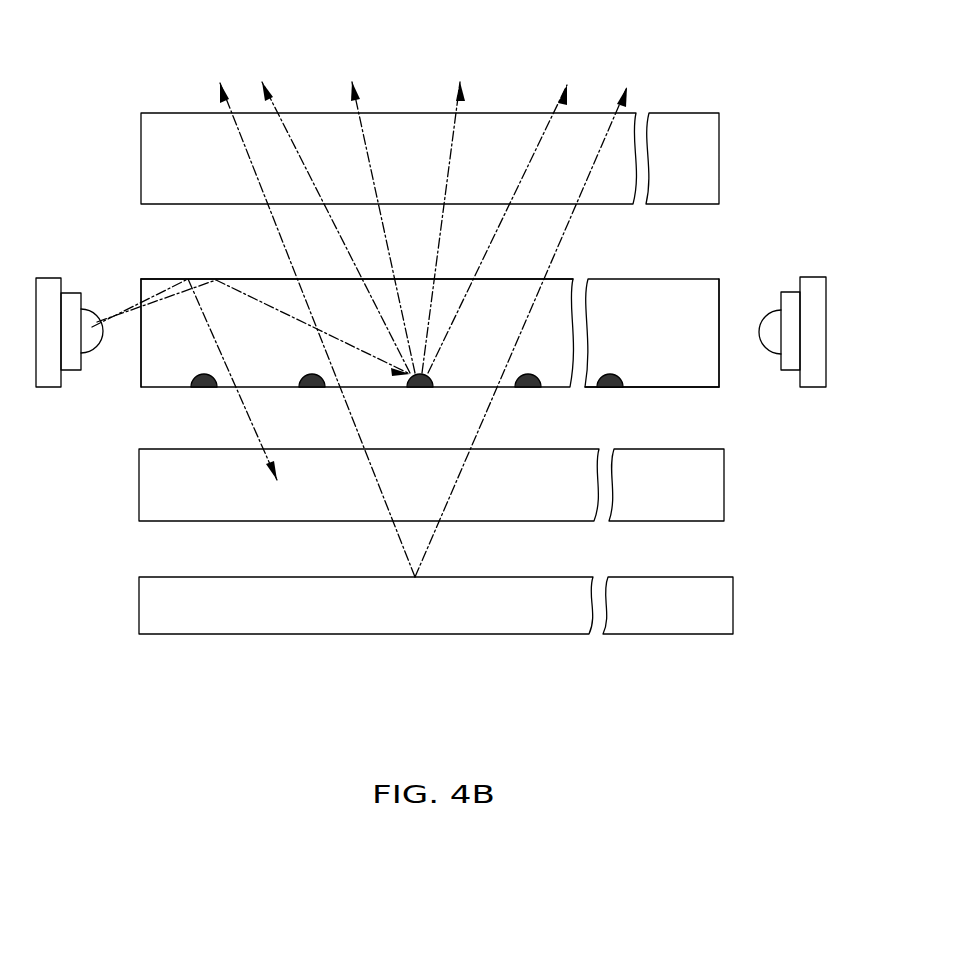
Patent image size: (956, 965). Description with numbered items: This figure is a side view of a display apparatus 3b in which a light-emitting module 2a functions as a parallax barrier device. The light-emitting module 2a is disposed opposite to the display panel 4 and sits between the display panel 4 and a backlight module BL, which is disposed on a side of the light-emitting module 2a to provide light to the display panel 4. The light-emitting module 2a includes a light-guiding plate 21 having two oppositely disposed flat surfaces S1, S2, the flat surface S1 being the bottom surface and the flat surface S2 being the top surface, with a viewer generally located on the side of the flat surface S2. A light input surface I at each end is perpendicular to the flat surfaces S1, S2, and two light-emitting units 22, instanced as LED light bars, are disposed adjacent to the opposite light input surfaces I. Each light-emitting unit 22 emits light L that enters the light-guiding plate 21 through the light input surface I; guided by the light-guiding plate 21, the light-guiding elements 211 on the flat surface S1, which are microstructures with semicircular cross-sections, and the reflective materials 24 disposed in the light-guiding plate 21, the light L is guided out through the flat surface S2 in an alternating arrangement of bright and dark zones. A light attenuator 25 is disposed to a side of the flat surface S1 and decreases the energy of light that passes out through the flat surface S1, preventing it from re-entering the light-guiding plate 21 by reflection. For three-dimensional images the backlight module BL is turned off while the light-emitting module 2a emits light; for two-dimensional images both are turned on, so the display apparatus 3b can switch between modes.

The display apparatus 3b is at (177, 56).
The display panel 4 is at (166, 157).
The light L is at (423, 316).
The light-emitting module 2a is at (145, 250).
The light-guiding plate 21 is at (278, 293).
The flat surface S2 is at (677, 278).
The flat surface S1 is at (683, 390).
The light input surface I is at (140, 295).
The reflective material 24 is at (204, 390).
The light-guiding element 211 is at (610, 374).
The light-emitting unit 22 is at (93, 342).
The light attenuator 25 is at (713, 503).
The backlight module BL is at (720, 609).